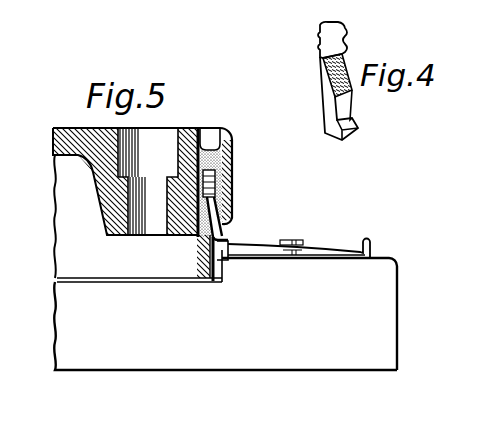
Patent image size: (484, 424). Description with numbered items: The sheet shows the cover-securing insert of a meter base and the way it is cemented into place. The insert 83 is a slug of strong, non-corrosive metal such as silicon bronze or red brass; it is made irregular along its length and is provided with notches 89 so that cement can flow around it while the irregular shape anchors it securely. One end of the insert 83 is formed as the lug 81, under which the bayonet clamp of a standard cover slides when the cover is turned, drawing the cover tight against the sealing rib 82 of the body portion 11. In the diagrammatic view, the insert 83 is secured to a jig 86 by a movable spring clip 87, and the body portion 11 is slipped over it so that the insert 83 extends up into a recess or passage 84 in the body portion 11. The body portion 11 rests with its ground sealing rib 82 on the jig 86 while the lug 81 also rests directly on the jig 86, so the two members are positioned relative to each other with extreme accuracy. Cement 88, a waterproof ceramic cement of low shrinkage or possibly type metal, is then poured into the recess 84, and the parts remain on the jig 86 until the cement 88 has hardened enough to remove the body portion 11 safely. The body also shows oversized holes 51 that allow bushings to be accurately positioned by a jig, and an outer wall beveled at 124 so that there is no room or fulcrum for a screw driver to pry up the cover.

In FIG. 5, the body portion 11 is at (196, 128).
In FIG. 5, the oversized holes 51 is at (150, 236).
In FIG. 5, the recess 84 is at (221, 133).
In FIG. 5, the cement 88 is at (224, 170).
In FIG. 5, the bevel 124 is at (227, 228).
In FIG. 5, the insert 83 is at (222, 238).
In FIG. 5, the lug 81 is at (228, 262).
In FIG. 5, the sealing rib 82 is at (203, 283).
In FIG. 5, the jig 86 is at (385, 298).
In FIG. 5, the spring clip 87 is at (318, 244).
In FIG. 4, the notches 89 is at (321, 43).